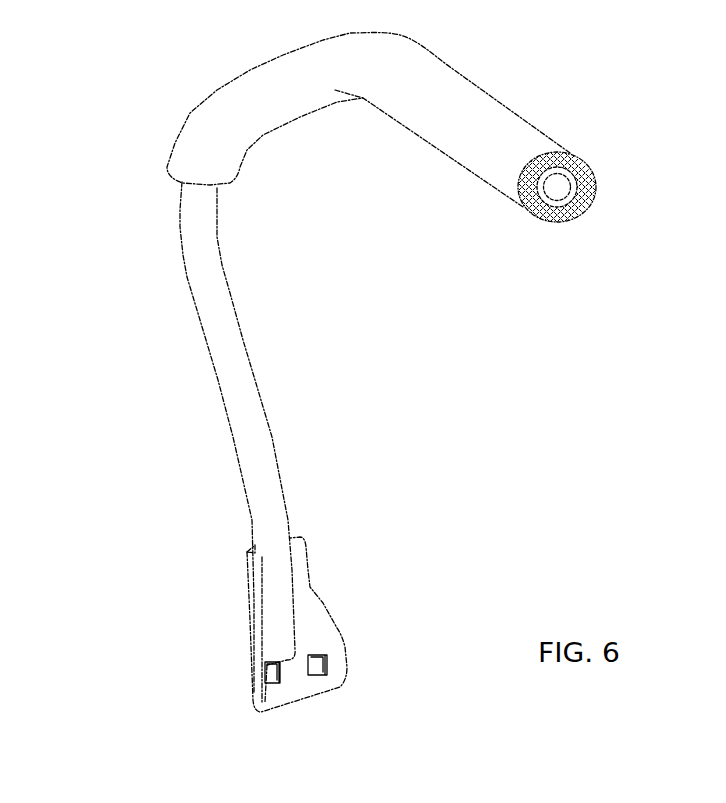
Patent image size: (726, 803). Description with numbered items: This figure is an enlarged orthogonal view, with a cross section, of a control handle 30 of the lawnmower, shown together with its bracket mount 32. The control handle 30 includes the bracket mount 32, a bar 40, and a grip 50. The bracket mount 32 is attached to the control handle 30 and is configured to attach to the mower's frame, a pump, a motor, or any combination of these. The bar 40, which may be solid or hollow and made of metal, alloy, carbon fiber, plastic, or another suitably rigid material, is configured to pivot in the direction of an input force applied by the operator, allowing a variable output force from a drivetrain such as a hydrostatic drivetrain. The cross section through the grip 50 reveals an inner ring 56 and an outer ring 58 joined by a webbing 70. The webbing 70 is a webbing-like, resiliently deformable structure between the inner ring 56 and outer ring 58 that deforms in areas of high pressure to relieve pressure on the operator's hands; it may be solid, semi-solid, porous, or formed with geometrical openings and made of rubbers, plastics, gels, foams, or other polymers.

The control handle 30 is at (92, 131).
The bracket mount 32 is at (305, 570).
The bar 40 is at (193, 275).
The grip 50 is at (397, 117).
The inner ring 56 is at (583, 190).
The outer ring 58 is at (537, 215).
The webbing 70 is at (580, 165).